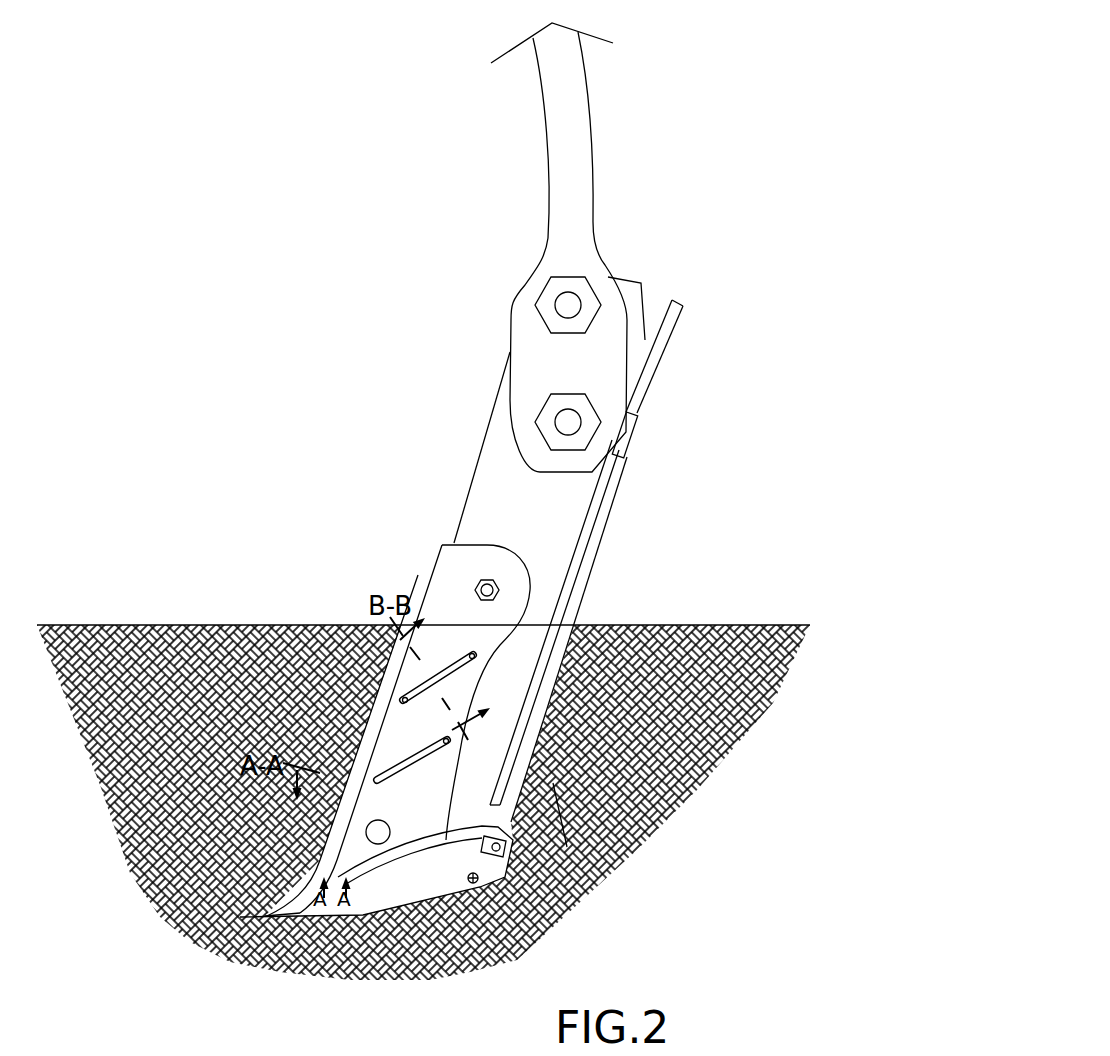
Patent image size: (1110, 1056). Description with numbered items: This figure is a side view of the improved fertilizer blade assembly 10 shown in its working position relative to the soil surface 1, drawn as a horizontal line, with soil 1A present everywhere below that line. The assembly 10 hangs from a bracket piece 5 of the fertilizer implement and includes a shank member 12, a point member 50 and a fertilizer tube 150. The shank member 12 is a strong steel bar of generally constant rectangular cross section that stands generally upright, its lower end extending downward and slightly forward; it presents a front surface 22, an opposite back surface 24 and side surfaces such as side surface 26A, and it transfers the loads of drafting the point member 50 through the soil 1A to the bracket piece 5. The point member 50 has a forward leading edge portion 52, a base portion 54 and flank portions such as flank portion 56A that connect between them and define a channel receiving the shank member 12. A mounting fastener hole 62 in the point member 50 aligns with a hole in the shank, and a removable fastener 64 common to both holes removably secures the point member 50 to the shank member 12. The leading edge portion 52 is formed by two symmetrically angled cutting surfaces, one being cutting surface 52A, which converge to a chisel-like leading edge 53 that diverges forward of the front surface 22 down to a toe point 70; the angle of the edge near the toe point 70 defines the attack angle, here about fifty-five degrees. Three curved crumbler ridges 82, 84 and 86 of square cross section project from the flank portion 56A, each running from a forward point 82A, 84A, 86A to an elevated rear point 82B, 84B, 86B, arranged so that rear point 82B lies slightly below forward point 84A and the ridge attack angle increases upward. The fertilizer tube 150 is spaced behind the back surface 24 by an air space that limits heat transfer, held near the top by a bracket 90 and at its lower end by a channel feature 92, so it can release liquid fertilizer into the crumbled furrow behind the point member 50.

The soil surface 1 is at (165, 625).
The soil 1A is at (140, 708).
The bracket piece 5 is at (575, 90).
The fertilizer blade assembly 10 is at (466, 249).
The shank member 12 is at (522, 490).
The front surface 22 is at (470, 493).
The back surface 24 is at (553, 592).
The side surface 26A is at (565, 512).
The point member 50 is at (316, 626).
The leading edge portion 52 is at (347, 663).
The cutting surface 52A is at (325, 833).
The leading edge 53 is at (358, 657).
The base portion 54 is at (396, 925).
The flank portion 56A is at (440, 741).
The mounting fastener hole 62 is at (499, 590).
The removable fastener 64 is at (530, 614).
The toe point 70 is at (263, 916).
The crumbler ridge 82 is at (383, 857).
The forward point 82A is at (309, 871).
The rear point 82B is at (567, 806).
The crumbler ridge 84 is at (402, 826).
The forward point 84A is at (372, 780).
The rear point 84B is at (402, 772).
The crumbler ridge 86 is at (473, 662).
The forward point 86A is at (403, 700).
The rear point 86B is at (473, 655).
The bracket 90 is at (632, 432).
The channel feature 92 is at (518, 800).
The fertilizer tube 150 is at (686, 348).